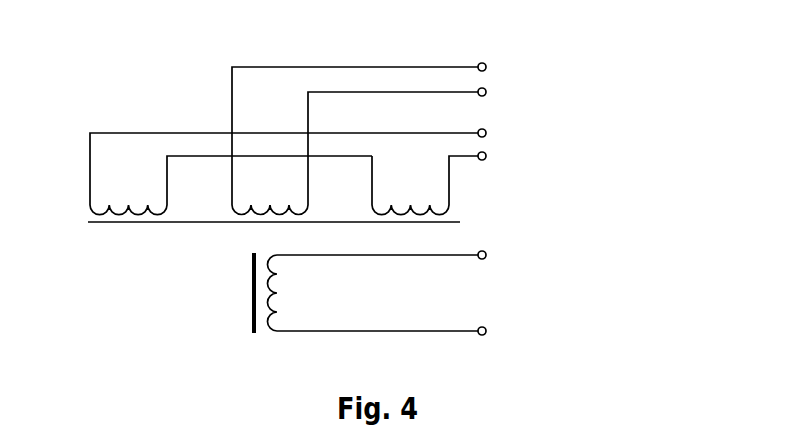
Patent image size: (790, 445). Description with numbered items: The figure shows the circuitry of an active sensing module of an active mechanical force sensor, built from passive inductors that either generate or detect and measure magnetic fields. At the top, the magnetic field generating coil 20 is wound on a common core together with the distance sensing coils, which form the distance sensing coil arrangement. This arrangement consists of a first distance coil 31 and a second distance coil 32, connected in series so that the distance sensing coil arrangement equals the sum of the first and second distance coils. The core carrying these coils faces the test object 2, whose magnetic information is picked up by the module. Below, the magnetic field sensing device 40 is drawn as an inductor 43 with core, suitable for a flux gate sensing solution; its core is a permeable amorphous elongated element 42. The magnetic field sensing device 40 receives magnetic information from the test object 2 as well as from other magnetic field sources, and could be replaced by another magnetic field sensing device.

The object 2 is at (100, 223).
The magnetic field generating coil 20 is at (407, 134).
The first distance coil 31 is at (388, 172).
The second distance coil 32 is at (542, 172).
The magnetic field sensing device 40 is at (426, 293).
The permeable amorphous elongated element 42 is at (252, 298).
The inductor with core 43 is at (208, 293).